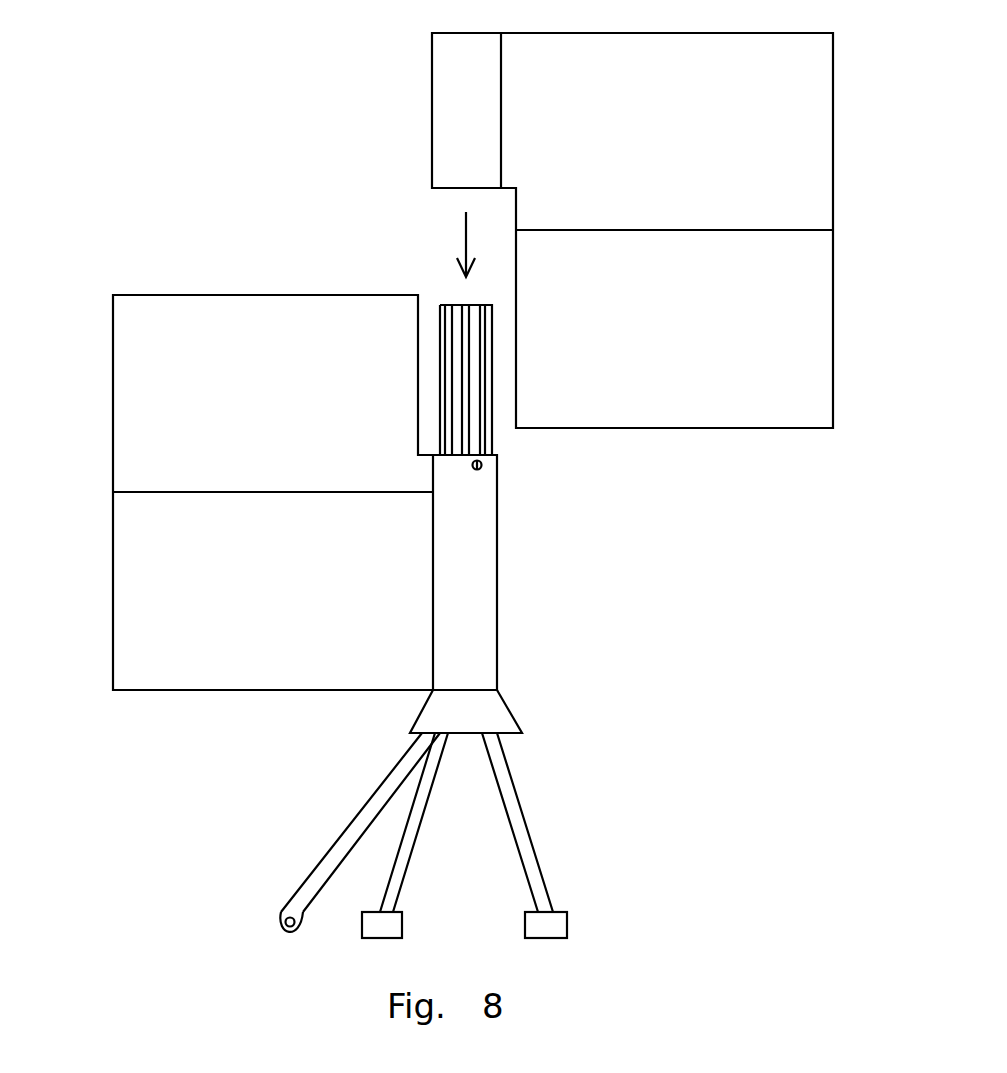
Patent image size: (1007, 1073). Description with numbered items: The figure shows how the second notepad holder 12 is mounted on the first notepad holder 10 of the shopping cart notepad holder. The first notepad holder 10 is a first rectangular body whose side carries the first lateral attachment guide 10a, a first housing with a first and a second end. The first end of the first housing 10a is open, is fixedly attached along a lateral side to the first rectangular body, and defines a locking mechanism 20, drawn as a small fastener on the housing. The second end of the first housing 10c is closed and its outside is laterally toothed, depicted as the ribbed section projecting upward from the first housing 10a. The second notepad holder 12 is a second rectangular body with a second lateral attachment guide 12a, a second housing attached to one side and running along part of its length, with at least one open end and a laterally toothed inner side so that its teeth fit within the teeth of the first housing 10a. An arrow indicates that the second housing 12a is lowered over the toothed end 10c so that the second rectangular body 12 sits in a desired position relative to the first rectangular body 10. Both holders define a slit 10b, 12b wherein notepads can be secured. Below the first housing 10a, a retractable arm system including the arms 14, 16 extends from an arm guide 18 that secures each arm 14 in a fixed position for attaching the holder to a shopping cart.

The first notepad holder 10 is at (290, 418).
The first lateral attachment guide 10a is at (473, 618).
The slit 10b is at (213, 503).
The second end of the first housing 10c is at (463, 307).
The second notepad holder 12 is at (690, 183).
The second lateral attachment guide 12a is at (450, 117).
The slit 12b is at (765, 233).
The arm 14 is at (363, 812).
The retractable arm system component 16 is at (562, 915).
The arm guide 18 is at (487, 718).
The locking mechanism 20 is at (481, 470).